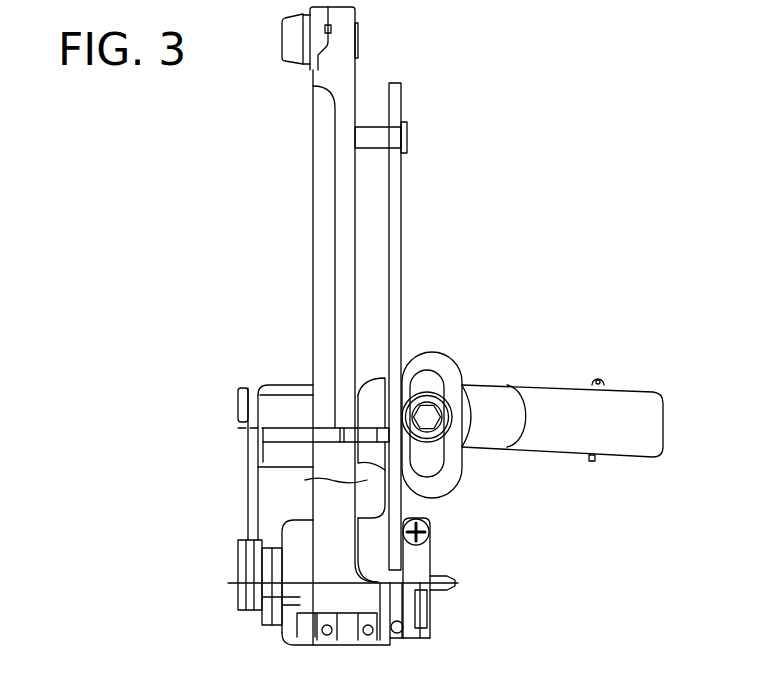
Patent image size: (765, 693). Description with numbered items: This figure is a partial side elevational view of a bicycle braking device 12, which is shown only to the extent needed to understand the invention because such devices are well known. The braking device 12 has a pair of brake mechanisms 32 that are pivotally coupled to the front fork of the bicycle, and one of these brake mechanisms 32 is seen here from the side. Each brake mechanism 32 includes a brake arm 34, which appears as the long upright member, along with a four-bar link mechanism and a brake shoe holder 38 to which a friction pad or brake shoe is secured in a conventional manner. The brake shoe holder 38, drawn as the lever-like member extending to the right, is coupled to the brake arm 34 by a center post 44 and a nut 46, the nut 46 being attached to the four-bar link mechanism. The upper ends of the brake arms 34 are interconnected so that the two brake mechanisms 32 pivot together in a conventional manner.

The braking device 12 is at (532, 114).
The brake mechanism 32 is at (441, 316).
The brake arm 34 is at (308, 278).
The brake shoe holder 38 is at (474, 457).
The center post 44 is at (433, 382).
The nut 46 is at (438, 392).